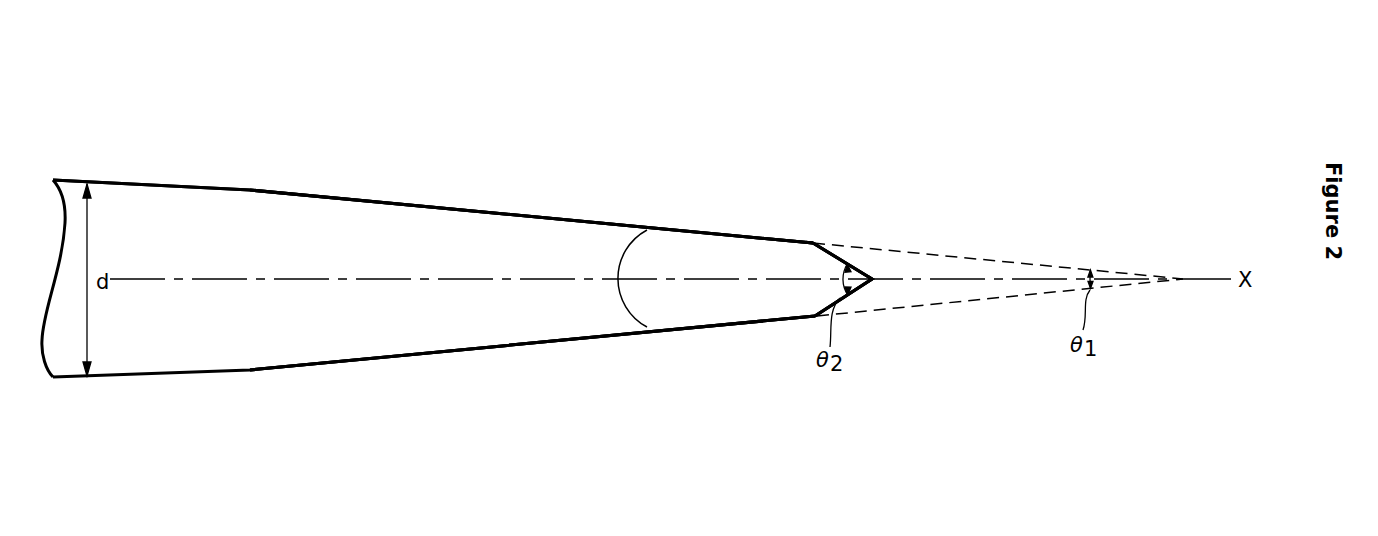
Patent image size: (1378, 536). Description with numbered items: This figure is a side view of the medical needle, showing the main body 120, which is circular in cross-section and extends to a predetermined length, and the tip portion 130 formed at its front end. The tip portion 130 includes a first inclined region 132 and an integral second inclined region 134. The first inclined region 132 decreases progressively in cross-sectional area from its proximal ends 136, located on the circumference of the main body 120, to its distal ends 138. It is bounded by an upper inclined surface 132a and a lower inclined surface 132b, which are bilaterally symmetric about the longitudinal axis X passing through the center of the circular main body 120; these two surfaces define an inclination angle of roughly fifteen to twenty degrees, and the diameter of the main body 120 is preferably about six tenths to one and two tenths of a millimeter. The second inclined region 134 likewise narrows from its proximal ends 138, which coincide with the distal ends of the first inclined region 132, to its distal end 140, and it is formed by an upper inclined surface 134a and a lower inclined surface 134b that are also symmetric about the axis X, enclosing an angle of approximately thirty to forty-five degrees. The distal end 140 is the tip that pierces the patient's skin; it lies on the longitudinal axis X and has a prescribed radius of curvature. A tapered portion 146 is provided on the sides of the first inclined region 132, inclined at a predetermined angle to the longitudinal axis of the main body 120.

The main body 120 is at (103, 197).
The tip portion 130 is at (553, 94).
The first inclined region 132 is at (376, 138).
The upper inclined surface 132a is at (408, 203).
The lower inclined surface 132b is at (365, 360).
The second inclined region 134 is at (898, 188).
The upper inclined surface 134a is at (848, 265).
The lower inclined surface 134b is at (855, 296).
The proximal ends 136 is at (143, 177).
The distal ends 138 is at (813, 242).
The distal end 140 is at (875, 278).
The tapered portion 146 is at (717, 307).